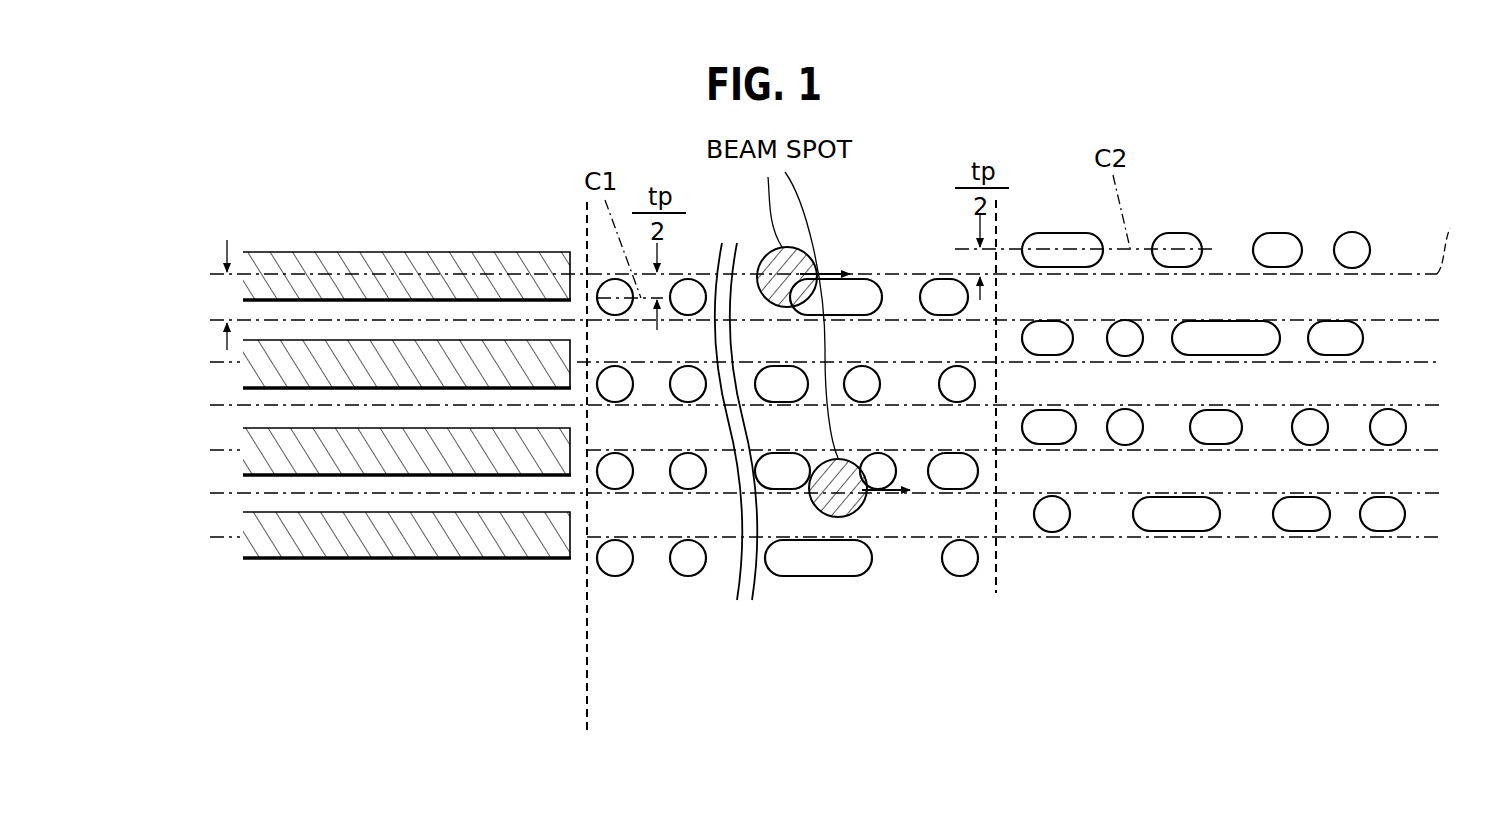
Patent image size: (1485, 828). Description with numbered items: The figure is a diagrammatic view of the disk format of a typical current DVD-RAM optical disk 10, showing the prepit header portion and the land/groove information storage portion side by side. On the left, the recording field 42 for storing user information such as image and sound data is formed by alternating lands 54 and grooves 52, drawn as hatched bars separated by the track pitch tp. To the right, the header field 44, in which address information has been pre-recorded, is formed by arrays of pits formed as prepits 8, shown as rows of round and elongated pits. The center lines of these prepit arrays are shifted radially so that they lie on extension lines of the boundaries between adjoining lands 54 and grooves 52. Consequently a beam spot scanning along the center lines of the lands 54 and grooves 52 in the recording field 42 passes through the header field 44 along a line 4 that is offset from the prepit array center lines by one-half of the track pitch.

The line 4 is at (1455, 236).
The prepit 8 is at (1130, 532).
The optical disk 10 is at (1278, 220).
The recording field 42 is at (787, 447).
The header field 44 is at (820, 596).
The groove 52 is at (244, 284).
The land 54 is at (250, 328).